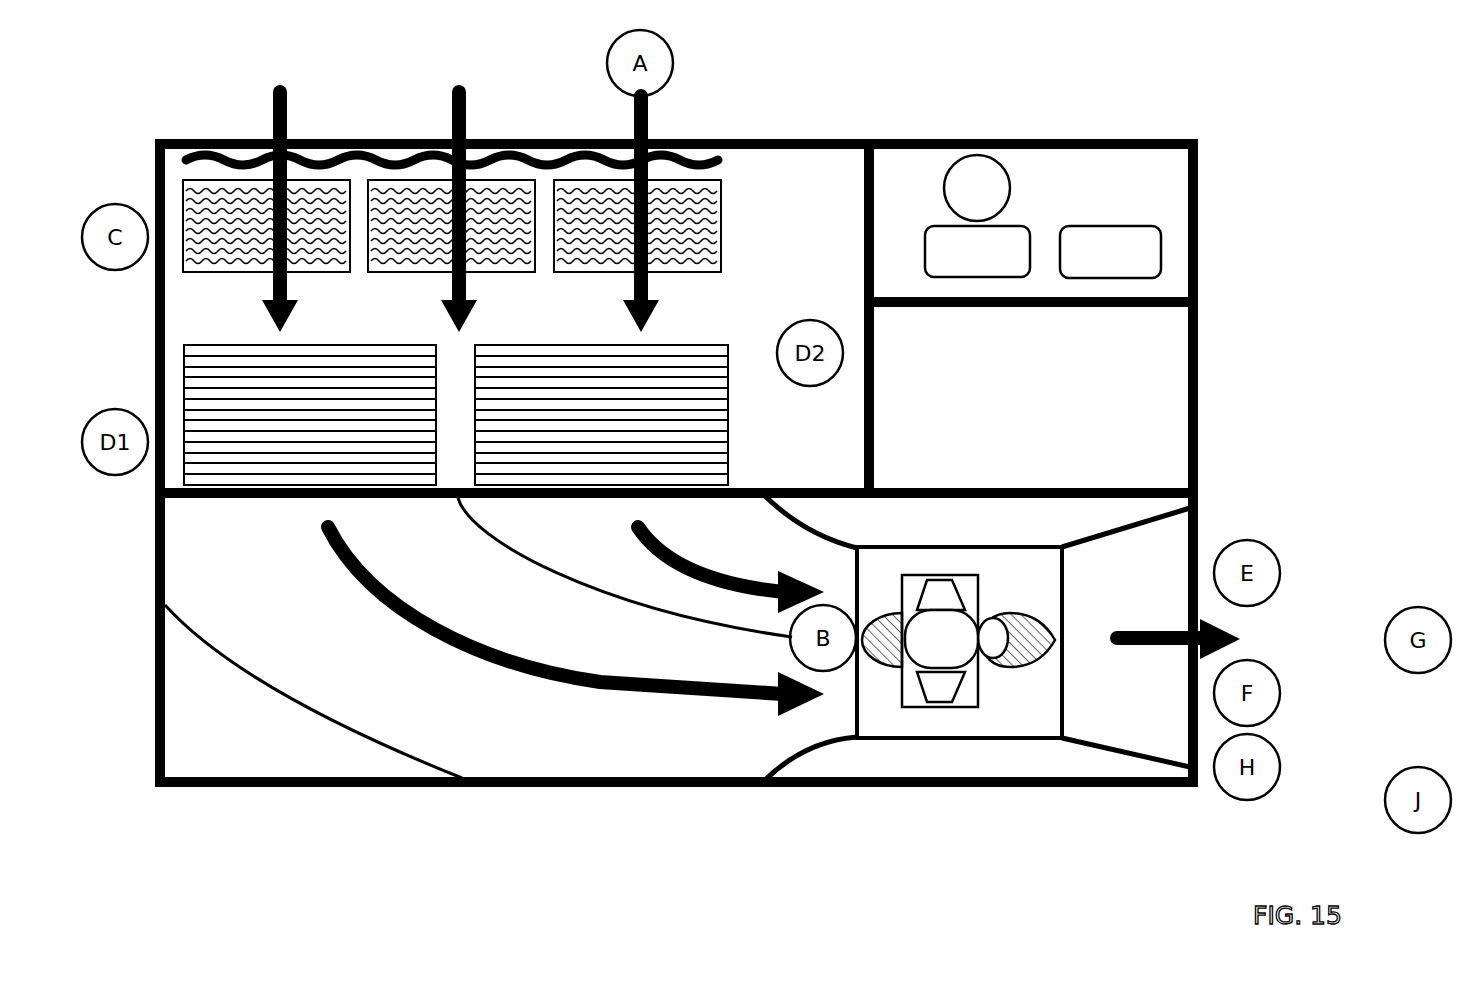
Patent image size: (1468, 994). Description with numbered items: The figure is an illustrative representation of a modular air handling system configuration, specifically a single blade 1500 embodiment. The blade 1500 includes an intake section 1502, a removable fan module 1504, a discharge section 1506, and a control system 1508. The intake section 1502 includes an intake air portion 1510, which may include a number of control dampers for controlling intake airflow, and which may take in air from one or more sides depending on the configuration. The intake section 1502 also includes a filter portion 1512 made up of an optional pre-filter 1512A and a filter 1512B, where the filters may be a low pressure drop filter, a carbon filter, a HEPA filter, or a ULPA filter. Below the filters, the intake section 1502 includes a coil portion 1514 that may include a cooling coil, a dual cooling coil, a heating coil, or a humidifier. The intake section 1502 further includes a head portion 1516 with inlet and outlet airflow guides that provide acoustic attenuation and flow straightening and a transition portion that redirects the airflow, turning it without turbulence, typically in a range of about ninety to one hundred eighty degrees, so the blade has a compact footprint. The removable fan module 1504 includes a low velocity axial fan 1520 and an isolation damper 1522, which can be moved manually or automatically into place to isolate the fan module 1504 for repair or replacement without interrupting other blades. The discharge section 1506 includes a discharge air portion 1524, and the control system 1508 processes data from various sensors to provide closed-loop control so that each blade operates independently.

The blade 1500 is at (1222, 88).
The intake section 1502 is at (158, 815).
The removable fan module 1504 is at (855, 815).
The discharge section 1506 is at (1072, 815).
The control system 1508 is at (1228, 156).
The intake air portion 1510 is at (460, 180).
The filter portion 1512 is at (755, 156).
The pre-filter 1512A is at (186, 158).
The filter 1512B is at (184, 206).
The coil portion 1514 is at (755, 349).
The head portion 1516 is at (478, 638).
The low velocity axial fan 1520 is at (958, 641).
The isolation damper 1522 is at (850, 710).
The discharge air portion 1524 is at (1126, 637).